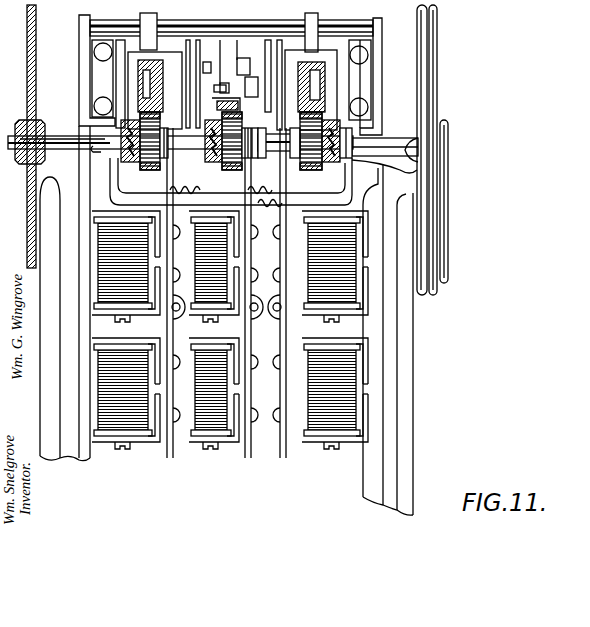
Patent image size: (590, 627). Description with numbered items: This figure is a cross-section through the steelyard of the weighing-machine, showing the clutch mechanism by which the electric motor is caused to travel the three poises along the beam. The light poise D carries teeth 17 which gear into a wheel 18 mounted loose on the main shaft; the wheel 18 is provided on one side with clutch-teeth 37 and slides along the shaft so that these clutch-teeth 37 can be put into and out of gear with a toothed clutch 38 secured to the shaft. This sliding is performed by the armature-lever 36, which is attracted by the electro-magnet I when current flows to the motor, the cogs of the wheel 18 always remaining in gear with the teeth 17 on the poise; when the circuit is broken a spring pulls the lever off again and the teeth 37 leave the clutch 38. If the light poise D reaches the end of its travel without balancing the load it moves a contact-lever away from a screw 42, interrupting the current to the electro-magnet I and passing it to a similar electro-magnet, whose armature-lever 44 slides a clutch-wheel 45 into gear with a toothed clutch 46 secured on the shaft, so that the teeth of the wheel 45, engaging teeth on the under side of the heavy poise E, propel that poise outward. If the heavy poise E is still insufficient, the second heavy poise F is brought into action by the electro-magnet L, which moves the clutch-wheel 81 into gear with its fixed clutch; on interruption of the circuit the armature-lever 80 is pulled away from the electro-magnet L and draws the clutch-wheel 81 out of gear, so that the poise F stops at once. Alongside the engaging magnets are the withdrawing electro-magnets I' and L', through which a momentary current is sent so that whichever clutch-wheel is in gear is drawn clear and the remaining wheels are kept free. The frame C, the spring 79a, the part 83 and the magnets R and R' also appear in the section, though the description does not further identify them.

The teeth 17 is at (238, 106).
The wheel 18 is at (232, 141).
The armature-lever 36 is at (245, 184).
The clutch-teeth 37 is at (224, 168).
The toothed clutch 38 is at (212, 138).
The screw 42 is at (131, 137).
The armature-lever 44 is at (287, 187).
The clutch-wheel 45 is at (322, 132).
The toothed clutch 46 is at (328, 170).
The spring 79a is at (194, 199).
The armature-lever 80 is at (174, 252).
The clutch-wheel 81 is at (142, 166).
The spring 83 is at (265, 206).
The frame leg C is at (412, 384).
The light poise D is at (218, 103).
The heavy poise E is at (298, 90).
The second heavy poise F is at (163, 80).
The electro-magnet L is at (126, 266).
The withdrawing electro-magnet L' is at (126, 393).
The electro-magnet I is at (214, 266).
The withdrawing electro-magnet I' is at (214, 393).
The electromagnet R is at (335, 266).
The electromagnet R' is at (335, 393).